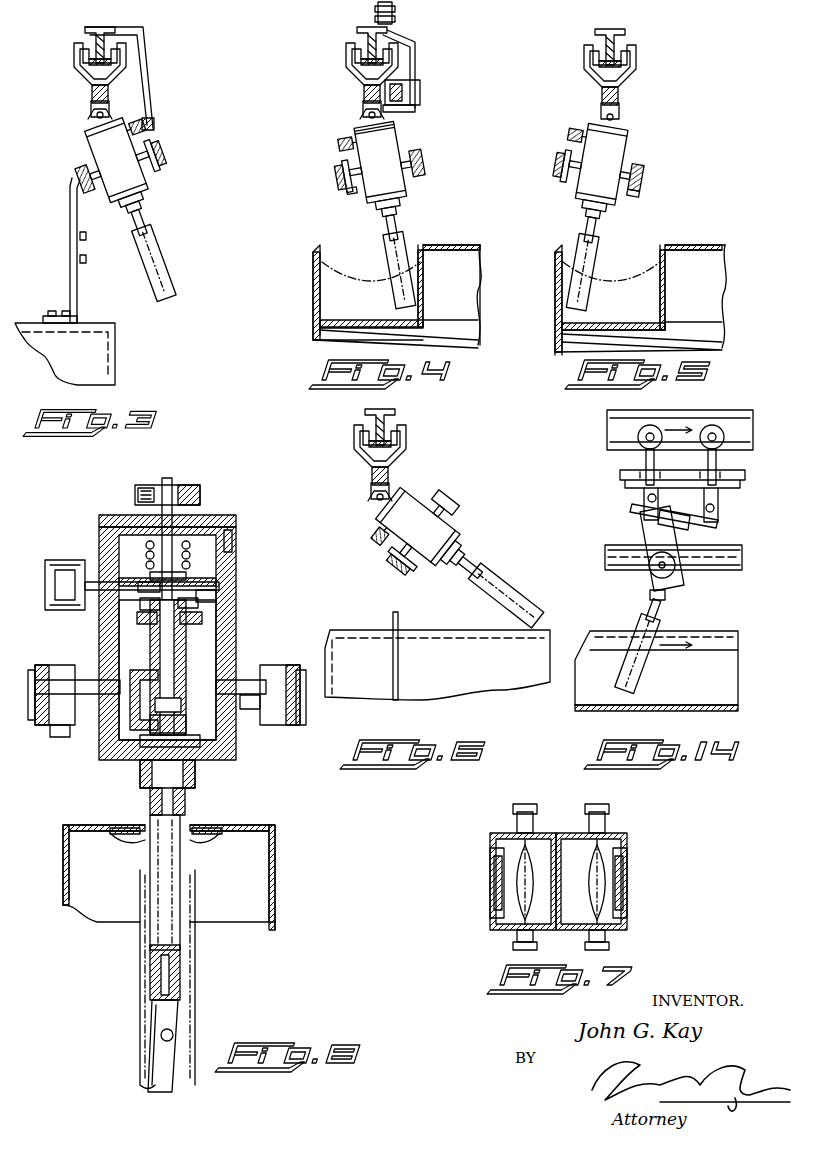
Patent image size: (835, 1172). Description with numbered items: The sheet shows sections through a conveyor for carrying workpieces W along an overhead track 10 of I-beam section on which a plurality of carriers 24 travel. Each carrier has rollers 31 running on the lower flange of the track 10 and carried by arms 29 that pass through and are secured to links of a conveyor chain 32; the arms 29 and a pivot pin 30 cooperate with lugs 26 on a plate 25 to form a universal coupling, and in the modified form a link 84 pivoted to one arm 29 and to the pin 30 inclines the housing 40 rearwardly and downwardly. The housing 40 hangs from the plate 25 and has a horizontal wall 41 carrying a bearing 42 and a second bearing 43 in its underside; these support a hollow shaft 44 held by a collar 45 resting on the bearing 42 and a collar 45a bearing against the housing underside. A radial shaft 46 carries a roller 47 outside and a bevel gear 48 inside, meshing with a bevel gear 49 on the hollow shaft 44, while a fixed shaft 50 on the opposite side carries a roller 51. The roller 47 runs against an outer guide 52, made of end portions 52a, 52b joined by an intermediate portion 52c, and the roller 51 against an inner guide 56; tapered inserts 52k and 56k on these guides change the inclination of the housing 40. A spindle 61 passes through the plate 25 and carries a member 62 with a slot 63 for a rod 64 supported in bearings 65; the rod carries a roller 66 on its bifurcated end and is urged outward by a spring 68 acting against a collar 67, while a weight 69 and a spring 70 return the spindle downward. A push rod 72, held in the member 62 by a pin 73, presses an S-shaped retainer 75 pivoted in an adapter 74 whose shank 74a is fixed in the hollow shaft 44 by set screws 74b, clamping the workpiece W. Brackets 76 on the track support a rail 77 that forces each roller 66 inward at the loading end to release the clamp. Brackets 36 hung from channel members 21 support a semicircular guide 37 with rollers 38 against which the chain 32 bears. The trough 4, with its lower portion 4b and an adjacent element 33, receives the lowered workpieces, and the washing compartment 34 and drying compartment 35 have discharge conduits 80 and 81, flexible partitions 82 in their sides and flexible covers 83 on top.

In FIG. 4, the trough 4 is at (462, 245).
In FIG. 5, the trough 4 is at (703, 245).
In FIG. 6, the trough 4 is at (354, 636).
In FIG. 14, the trough 4 is at (720, 631).
In FIG. 4, the pan bottom 4b is at (316, 342).
In FIG. 5, the pan bottom 4b is at (558, 345).
In FIG. 3, the track 10 is at (85, 42).
In FIG. 4, the track 10 is at (357, 43).
In FIG. 5, the track 10 is at (610, 36).
In FIG. 6, the track 10 is at (392, 421).
In FIG. 14, the track 10 is at (725, 410).
In FIG. 4, the channel members 21 is at (378, 8).
In FIG. 3, the carrier 24 is at (148, 187).
In FIG. 4, the carrier 24 is at (360, 200).
In FIG. 5, the carrier 24 is at (628, 150).
In FIG. 6, the carrier 24 is at (418, 526).
In FIG. 14, the carrier 24 is at (650, 573).
In FIG. 8, the carrier 24 is at (236, 648).
In FIG. 4, the plate 25 is at (392, 133).
In FIG. 8, the plate 25 is at (110, 515).
In FIG. 3, the lugs 26 is at (85, 123).
In FIG. 4, the lugs 26 is at (357, 118).
In FIG. 6, the lugs 26 is at (365, 500).
In FIG. 14, the lugs 26 is at (718, 524).
In FIG. 3, the arms 29 is at (87, 104).
In FIG. 4, the arms 29 is at (356, 106).
In FIG. 6, the arms 29 is at (366, 490).
In FIG. 14, the pivot pin 30 is at (690, 526).
In FIG. 3, the rollers 31 is at (90, 61).
In FIG. 4, the rollers 31 is at (357, 60).
In FIG. 5, the rollers 31 is at (615, 58).
In FIG. 6, the rollers 31 is at (372, 440).
In FIG. 14, the rollers 31 is at (722, 442).
In FIG. 3, the conveyor chain 32 is at (114, 93).
In FIG. 4, the conveyor chain 32 is at (355, 91).
In FIG. 5, the conveyor chain 32 is at (626, 96).
In FIG. 6, the conveyor chain 32 is at (394, 474).
In FIG. 14, the conveyor chain 32 is at (740, 472).
In FIG. 6, the divider wall 33 is at (455, 630).
In FIG. 8, the washing compartment 34 is at (275, 840).
In FIG. 7, the washing compartment 34 is at (505, 833).
In FIG. 7, the drying compartment 35 is at (615, 833).
In FIG. 4, the brackets 36 is at (415, 60).
In FIG. 4, the semicircular guide 37 is at (418, 84).
In FIG. 4, the rollers 38 is at (400, 112).
In FIG. 3, the housing 40 is at (118, 200).
In FIG. 4, the housing 40 is at (395, 200).
In FIG. 5, the housing 40 is at (610, 204).
In FIG. 6, the housing 40 is at (458, 536).
In FIG. 14, the housing 40 is at (678, 582).
In FIG. 8, the housing 40 is at (216, 555).
In FIG. 8, the horizontal wall 41 is at (186, 670).
In FIG. 8, the bearing 42 is at (200, 618).
In FIG. 8, the bearing 43 is at (200, 742).
In FIG. 8, the hollow shaft 44 is at (181, 702).
In FIG. 8, the collar 45 is at (196, 606).
In FIG. 8, the collar 45a is at (195, 775).
In FIG. 8, the shaft 46 is at (82, 688).
In FIG. 3, the roller 47 is at (165, 165).
In FIG. 4, the roller 47 is at (345, 198).
In FIG. 5, the roller 47 is at (566, 182).
In FIG. 6, the roller 47 is at (412, 566).
In FIG. 14, the roller 47 is at (650, 596).
In FIG. 8, the roller 47 is at (55, 737).
In FIG. 8, the bevel gear 48 is at (135, 675).
In FIG. 8, the bevel gear 49 is at (186, 722).
In FIG. 8, the fixed shaft 50 is at (250, 709).
In FIG. 3, the roller 51 is at (92, 196).
In FIG. 4, the roller 51 is at (418, 188).
In FIG. 5, the roller 51 is at (633, 186).
In FIG. 6, the roller 51 is at (452, 508).
In FIG. 8, the roller 51 is at (296, 722).
In FIG. 3, the outer guide 52 is at (160, 145).
In FIG. 4, the outer guide 52 is at (325, 162).
In FIG. 5, the outer guide 52 is at (553, 160).
In FIG. 6, the outer guide 52 is at (386, 572).
In FIG. 14, the outer guide 52 is at (619, 541).
In FIG. 8, the outer guide 52 is at (51, 657).
In FIG. 4, the semicircular end portion 52a is at (326, 170).
In FIG. 3, the semicircular end portion 52b is at (167, 152).
In FIG. 5, the intermediate guide portion 52c is at (553, 170).
In FIG. 6, the intermediate guide portion 52c is at (396, 580).
In FIG. 8, the intermediate guide portion 52c is at (28, 688).
In FIG. 4, the tapered pad or insert 52k is at (340, 188).
In FIG. 14, the tapered pad or insert 52k is at (724, 572).
In FIG. 3, the inner guide 56 is at (80, 172).
In FIG. 4, the inner guide 56 is at (426, 172).
In FIG. 5, the inner guide 56 is at (652, 165).
In FIG. 8, the inner guide 56 is at (290, 665).
In FIG. 5, the tapered pad or insert 56k is at (650, 188).
In FIG. 8, the spindle 61 is at (168, 478).
In FIG. 8, the member 62 is at (186, 574).
In FIG. 8, the horizontal slot 63 is at (145, 582).
In FIG. 8, the rod 64 is at (145, 600).
In FIG. 8, the bearings 65 is at (119, 585).
In FIG. 3, the roller 66 is at (138, 122).
In FIG. 4, the roller 66 is at (332, 142).
In FIG. 5, the roller 66 is at (566, 137).
In FIG. 6, the roller 66 is at (372, 548).
In FIG. 8, the roller 66 is at (45, 590).
In FIG. 8, the collar 67 is at (232, 540).
In FIG. 8, the helical spring 68 is at (216, 596).
In FIG. 3, the weight 69 is at (81, 115).
In FIG. 5, the weight 69 is at (627, 113).
In FIG. 6, the weight 69 is at (363, 509).
In FIG. 14, the weight 69 is at (660, 500).
In FIG. 8, the weight 69 is at (200, 490).
In FIG. 8, the helical spring 70 is at (186, 542).
In FIG. 8, the push rod 72 is at (180, 692).
In FIG. 8, the horizontal pin 73 is at (137, 616).
In FIG. 3, the adapter 74 is at (140, 215).
In FIG. 4, the adapter 74 is at (392, 222).
In FIG. 5, the adapter 74 is at (590, 223).
In FIG. 6, the adapter 74 is at (468, 561).
In FIG. 14, the adapter 74 is at (652, 612).
In FIG. 8, the adapter 74 is at (180, 892).
In FIG. 8, the shank 74a is at (185, 802).
In FIG. 8, the set screws 74b is at (150, 800).
In FIG. 8, the S-shaped retainer 75 is at (165, 1095).
In FIG. 3, the brackets 76 is at (150, 62).
In FIG. 3, the rail 77 is at (150, 118).
In FIG. 7, the discharge conduits 80 is at (533, 816).
In FIG. 7, the discharge conduits 81 is at (605, 812).
In FIG. 7, the flexible vertical partitions 82 is at (490, 882).
In FIG. 8, the flexible covers 83 is at (135, 845).
In FIG. 14, the link 84 is at (718, 510).
In FIG. 3, the workpiece W is at (166, 262).
In FIG. 4, the workpiece W is at (384, 250).
In FIG. 5, the workpiece W is at (598, 258).
In FIG. 6, the workpiece W is at (510, 592).
In FIG. 14, the workpiece W is at (645, 675).
In FIG. 8, the workpiece W is at (195, 990).